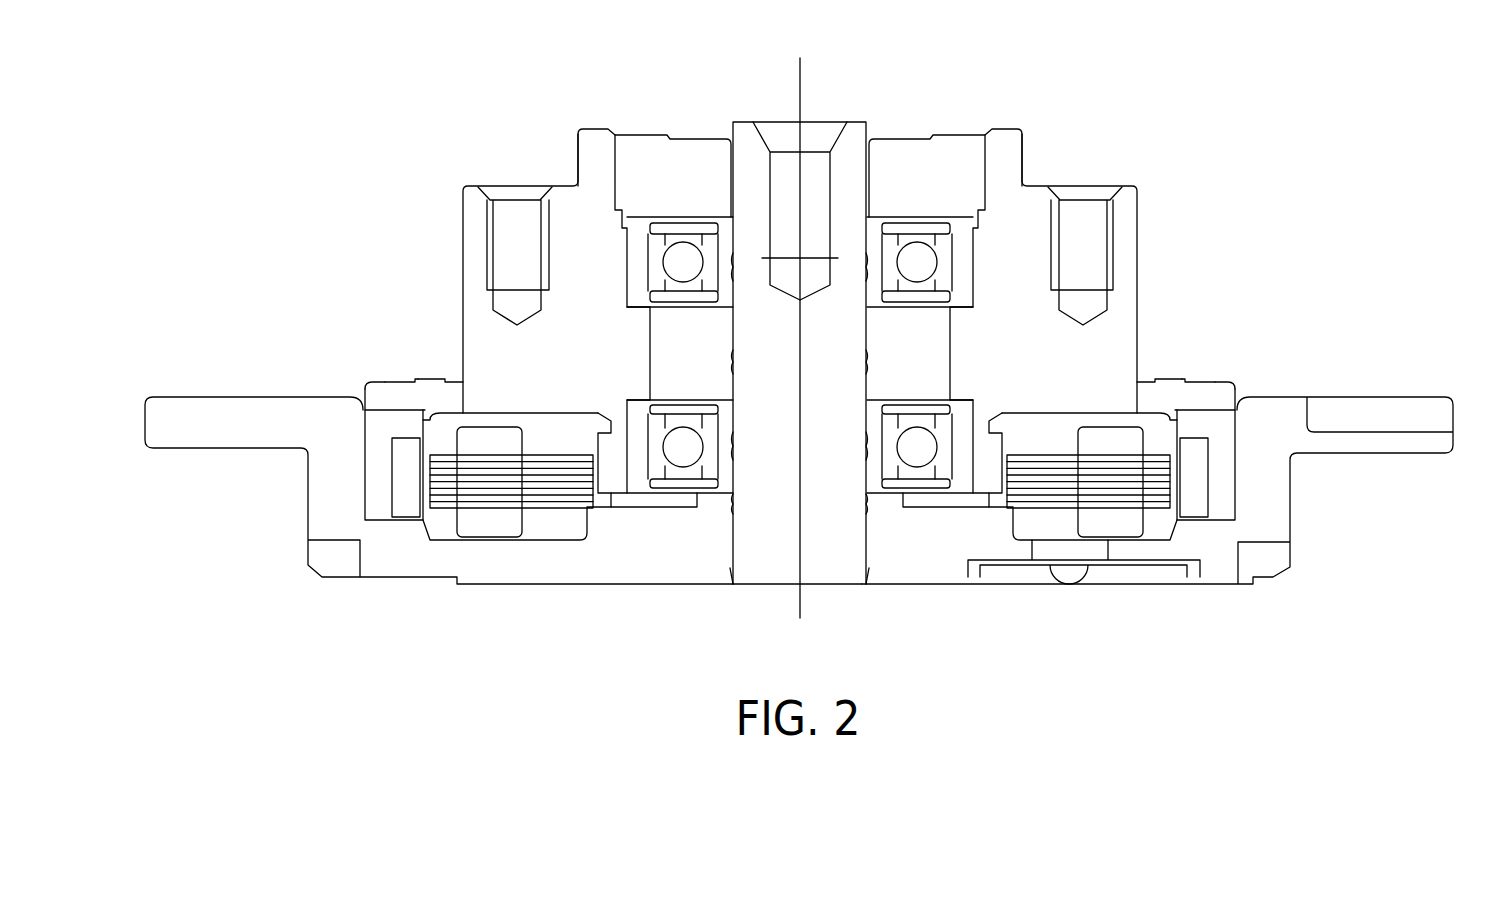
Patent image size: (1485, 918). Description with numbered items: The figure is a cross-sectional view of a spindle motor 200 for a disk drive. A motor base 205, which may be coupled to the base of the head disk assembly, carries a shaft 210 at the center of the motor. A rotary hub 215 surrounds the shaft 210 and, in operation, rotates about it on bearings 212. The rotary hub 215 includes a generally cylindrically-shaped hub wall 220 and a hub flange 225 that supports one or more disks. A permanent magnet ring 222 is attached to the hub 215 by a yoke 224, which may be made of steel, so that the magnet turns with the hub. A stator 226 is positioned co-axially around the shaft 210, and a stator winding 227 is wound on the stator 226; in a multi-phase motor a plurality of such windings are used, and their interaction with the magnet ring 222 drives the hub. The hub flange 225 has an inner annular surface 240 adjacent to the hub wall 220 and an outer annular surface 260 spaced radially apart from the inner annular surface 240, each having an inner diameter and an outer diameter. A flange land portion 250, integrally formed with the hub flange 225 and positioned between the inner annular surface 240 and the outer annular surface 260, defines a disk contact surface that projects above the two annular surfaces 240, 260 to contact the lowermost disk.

The spindle motor 200 is at (1158, 66).
The motor base 205 is at (1272, 533).
The shaft 210 is at (820, 98).
The bearings 212 is at (690, 261).
The rotary hub 215 is at (1020, 217).
The hub wall 220 is at (1140, 298).
The permanent magnet ring 222 is at (400, 472).
The yoke 224 is at (376, 504).
The hub flange 225 is at (365, 386).
The stator 226 is at (578, 500).
The stator winding 227 is at (477, 527).
The inner annular surface 240 is at (437, 380).
The flange land portion 250 is at (400, 380).
The outer annular surface 260 is at (368, 381).